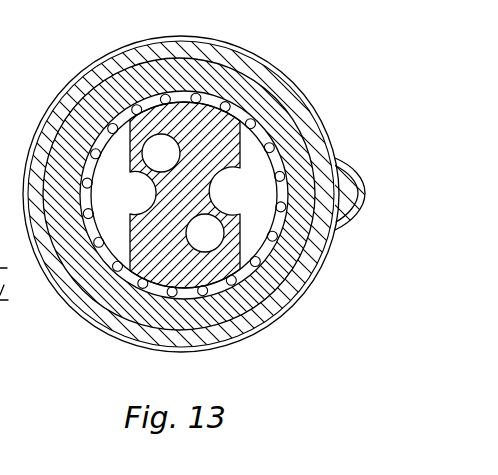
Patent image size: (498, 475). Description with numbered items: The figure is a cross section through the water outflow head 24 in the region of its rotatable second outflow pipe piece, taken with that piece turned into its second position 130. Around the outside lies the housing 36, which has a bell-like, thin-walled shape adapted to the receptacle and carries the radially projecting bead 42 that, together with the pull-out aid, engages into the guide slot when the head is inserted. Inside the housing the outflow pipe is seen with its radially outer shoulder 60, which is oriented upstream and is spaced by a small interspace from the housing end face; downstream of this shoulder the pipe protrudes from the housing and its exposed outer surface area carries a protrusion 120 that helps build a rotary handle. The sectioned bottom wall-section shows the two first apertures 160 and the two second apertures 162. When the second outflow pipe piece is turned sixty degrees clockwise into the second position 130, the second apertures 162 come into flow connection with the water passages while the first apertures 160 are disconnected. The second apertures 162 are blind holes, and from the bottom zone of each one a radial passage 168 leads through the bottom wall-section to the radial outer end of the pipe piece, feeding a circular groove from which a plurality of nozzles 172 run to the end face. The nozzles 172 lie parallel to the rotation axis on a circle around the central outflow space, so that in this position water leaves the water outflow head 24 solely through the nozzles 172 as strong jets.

The water outflow head 24 is at (331, 75).
The housing 36 is at (240, 315).
The bead 42 is at (322, 133).
The radially outer shoulder 60 is at (278, 308).
The protrusion 120 is at (350, 213).
The second position 130 is at (350, 175).
The first apertures 160 is at (153, 143).
The second apertures 162 is at (215, 193).
The radial passage 168 is at (115, 223).
The nozzles 172 is at (233, 103).